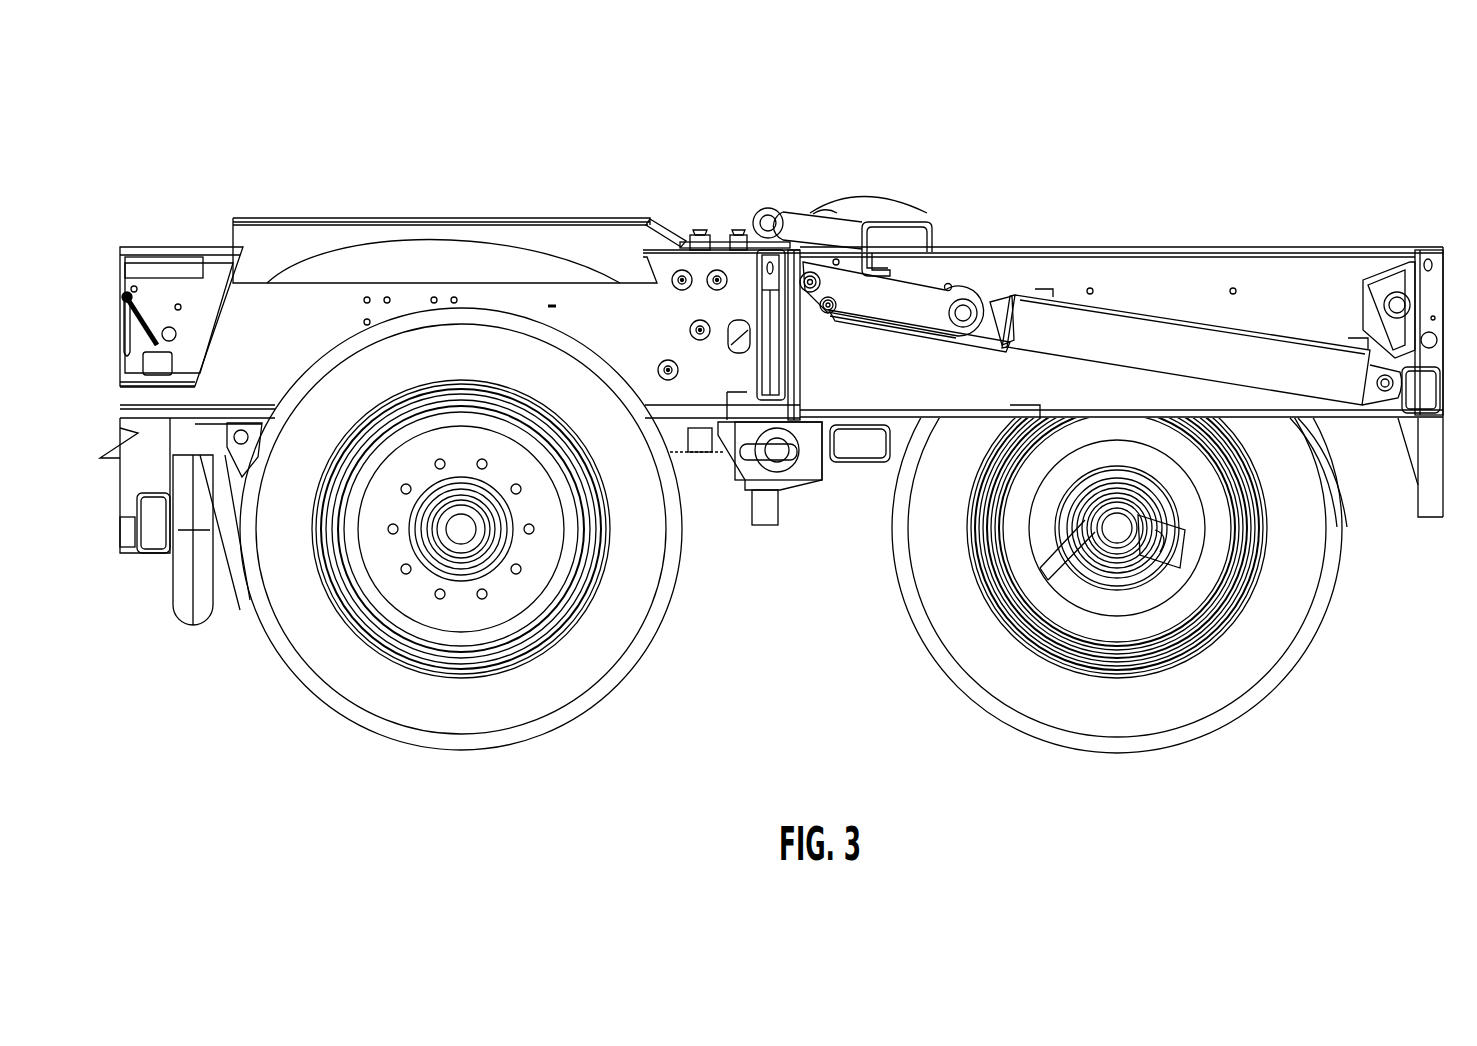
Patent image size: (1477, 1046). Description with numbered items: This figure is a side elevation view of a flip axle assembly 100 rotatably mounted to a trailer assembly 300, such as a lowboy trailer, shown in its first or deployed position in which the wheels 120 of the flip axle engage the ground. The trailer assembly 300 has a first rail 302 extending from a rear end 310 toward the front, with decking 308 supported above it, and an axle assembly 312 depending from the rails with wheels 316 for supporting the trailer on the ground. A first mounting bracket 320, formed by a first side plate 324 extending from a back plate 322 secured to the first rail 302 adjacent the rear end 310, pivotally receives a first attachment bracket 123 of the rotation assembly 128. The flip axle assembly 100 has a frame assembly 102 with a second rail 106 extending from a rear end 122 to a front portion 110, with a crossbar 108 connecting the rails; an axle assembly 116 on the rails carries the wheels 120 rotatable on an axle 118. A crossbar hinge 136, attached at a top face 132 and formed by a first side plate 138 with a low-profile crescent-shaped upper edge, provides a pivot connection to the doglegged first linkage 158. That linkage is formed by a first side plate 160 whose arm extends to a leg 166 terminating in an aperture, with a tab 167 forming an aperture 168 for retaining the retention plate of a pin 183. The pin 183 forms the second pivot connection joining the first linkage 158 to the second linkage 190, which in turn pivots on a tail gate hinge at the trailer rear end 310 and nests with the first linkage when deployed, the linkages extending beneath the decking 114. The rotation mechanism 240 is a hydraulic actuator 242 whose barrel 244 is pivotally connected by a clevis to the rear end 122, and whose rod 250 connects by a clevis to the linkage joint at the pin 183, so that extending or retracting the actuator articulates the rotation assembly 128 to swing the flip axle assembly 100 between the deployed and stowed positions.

The flip axle assembly 100 is at (1160, 188).
The frame assembly 102 is at (1293, 165).
The second rail 106 is at (1127, 270).
The crossbar 108 is at (850, 462).
The front portion 110 is at (790, 535).
The decking 114 is at (1086, 248).
The axle assembly 116 is at (1235, 735).
The axle 118 is at (1115, 528).
The wheels 120 is at (985, 675).
The rear end 122 is at (1443, 310).
The first attachment bracket 123 is at (789, 240).
The rotation assembly 128 is at (830, 328).
The top face 132 is at (905, 210).
The crossbar hinge 136 is at (868, 180).
The first side plate 138 is at (850, 205).
The first linkage 158 is at (918, 270).
The first side plate 160 is at (923, 312).
The leg 166 is at (895, 303).
The tab 167 is at (968, 299).
The aperture 168 is at (1000, 292).
The pin 183 is at (952, 283).
The second linkage 190 is at (880, 330).
The rotation mechanism 240 is at (1210, 315).
The hydraulic actuator 242 is at (1180, 307).
The barrel 244 is at (1233, 347).
The rod 250 is at (1010, 343).
The trailer assembly 300 is at (410, 162).
The first rail 302 is at (260, 270).
The decking 308 is at (307, 215).
The rear end 310 is at (722, 395).
The axle assembly 312 is at (365, 752).
The wheels 316 is at (318, 660).
The first mounting bracket 320 is at (698, 170).
The back plate 322 is at (712, 235).
The first side plate 324 is at (740, 208).